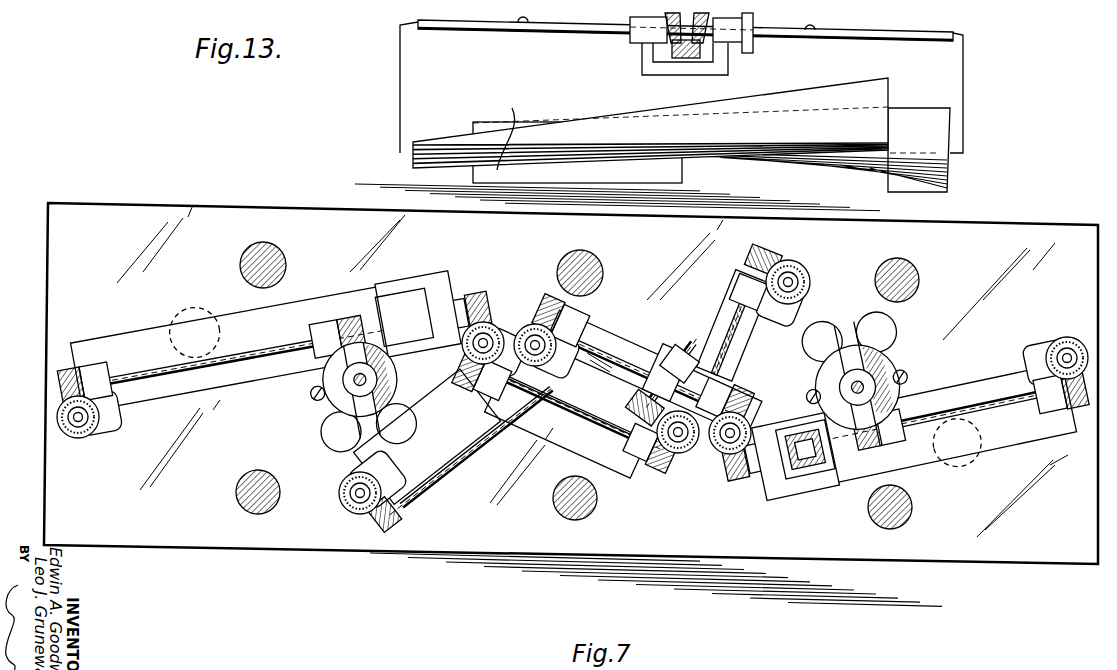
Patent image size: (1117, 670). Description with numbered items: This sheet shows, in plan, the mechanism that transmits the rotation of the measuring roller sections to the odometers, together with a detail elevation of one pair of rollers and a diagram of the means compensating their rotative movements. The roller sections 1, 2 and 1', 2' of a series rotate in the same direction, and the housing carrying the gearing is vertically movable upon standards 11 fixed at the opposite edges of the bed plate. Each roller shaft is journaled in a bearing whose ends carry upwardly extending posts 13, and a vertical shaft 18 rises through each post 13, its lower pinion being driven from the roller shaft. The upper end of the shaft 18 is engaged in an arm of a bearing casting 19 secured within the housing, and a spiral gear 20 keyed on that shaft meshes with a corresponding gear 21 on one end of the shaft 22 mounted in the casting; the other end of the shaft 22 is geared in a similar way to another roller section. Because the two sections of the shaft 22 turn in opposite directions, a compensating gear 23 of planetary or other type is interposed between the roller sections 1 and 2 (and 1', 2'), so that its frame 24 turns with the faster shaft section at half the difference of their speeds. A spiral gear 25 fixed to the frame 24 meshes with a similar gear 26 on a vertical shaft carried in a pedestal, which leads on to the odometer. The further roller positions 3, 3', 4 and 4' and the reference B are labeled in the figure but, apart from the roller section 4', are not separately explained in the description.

In FIG. 13, the roller section 1 is at (650, 123).
In FIG. 7, the roller section 1 is at (54, 426).
In FIG. 7, the roller section 1' is at (1067, 335).
In FIG. 13, the roller section 2 is at (775, 150).
In FIG. 7, the roller section 2 is at (491, 311).
In FIG. 7, the roller section 2' is at (721, 464).
In FIG. 7, the third pivot joint 3 is at (676, 465).
In FIG. 7, the third pivot joint (opposite side) 3' is at (535, 314).
In FIG. 7, the fourth pivot joint 4 is at (810, 273).
In FIG. 7, the roller section 4' is at (340, 506).
In FIG. 7, the standards 11 is at (252, 272).
In FIG. 7, the post 13 is at (84, 426).
In FIG. 7, the vertical shaft 18 is at (100, 418).
In FIG. 7, the bearing casting 19 is at (112, 343).
In FIG. 7, the spiral gear 20 is at (490, 334).
In FIG. 7, the gear 21 is at (480, 300).
In FIG. 13, the shaft 22 is at (556, 38).
In FIG. 7, the shaft 22 is at (270, 383).
In FIG. 13, the compensating gear 23 is at (691, 37).
In FIG. 7, the compensating gear 23 is at (790, 470).
In FIG. 7, the frame of the compensating gear 24 is at (400, 290).
In FIG. 7, the spiral gear 25 is at (344, 318).
In FIG. 7, the gear 26 is at (325, 398).
In FIG. 13, the section line B is at (508, 130).